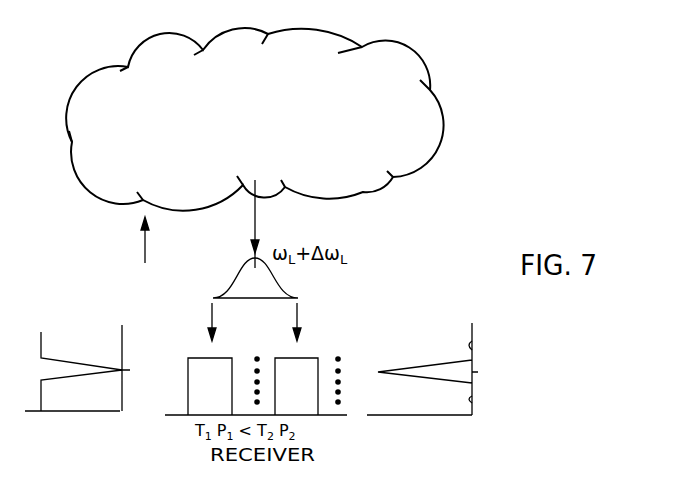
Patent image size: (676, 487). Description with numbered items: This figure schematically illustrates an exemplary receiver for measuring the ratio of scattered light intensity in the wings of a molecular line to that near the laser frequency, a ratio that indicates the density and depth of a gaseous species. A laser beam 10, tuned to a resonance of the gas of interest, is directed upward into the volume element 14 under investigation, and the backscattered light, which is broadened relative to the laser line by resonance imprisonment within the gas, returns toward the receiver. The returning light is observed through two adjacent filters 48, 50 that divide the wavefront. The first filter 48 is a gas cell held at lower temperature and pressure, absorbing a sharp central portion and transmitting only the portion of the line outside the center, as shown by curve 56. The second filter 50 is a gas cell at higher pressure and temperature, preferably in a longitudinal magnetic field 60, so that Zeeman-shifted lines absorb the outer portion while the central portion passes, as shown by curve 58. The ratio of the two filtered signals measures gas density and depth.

The volume element 14 is at (328, 38).
The laser beam 10 is at (145, 250).
The first filter 48 is at (193, 358).
The second filter 50 is at (305, 358).
The longitudinal magnetic field 60 is at (252, 372).
The curve 56 is at (98, 365).
The curve 58 is at (448, 363).